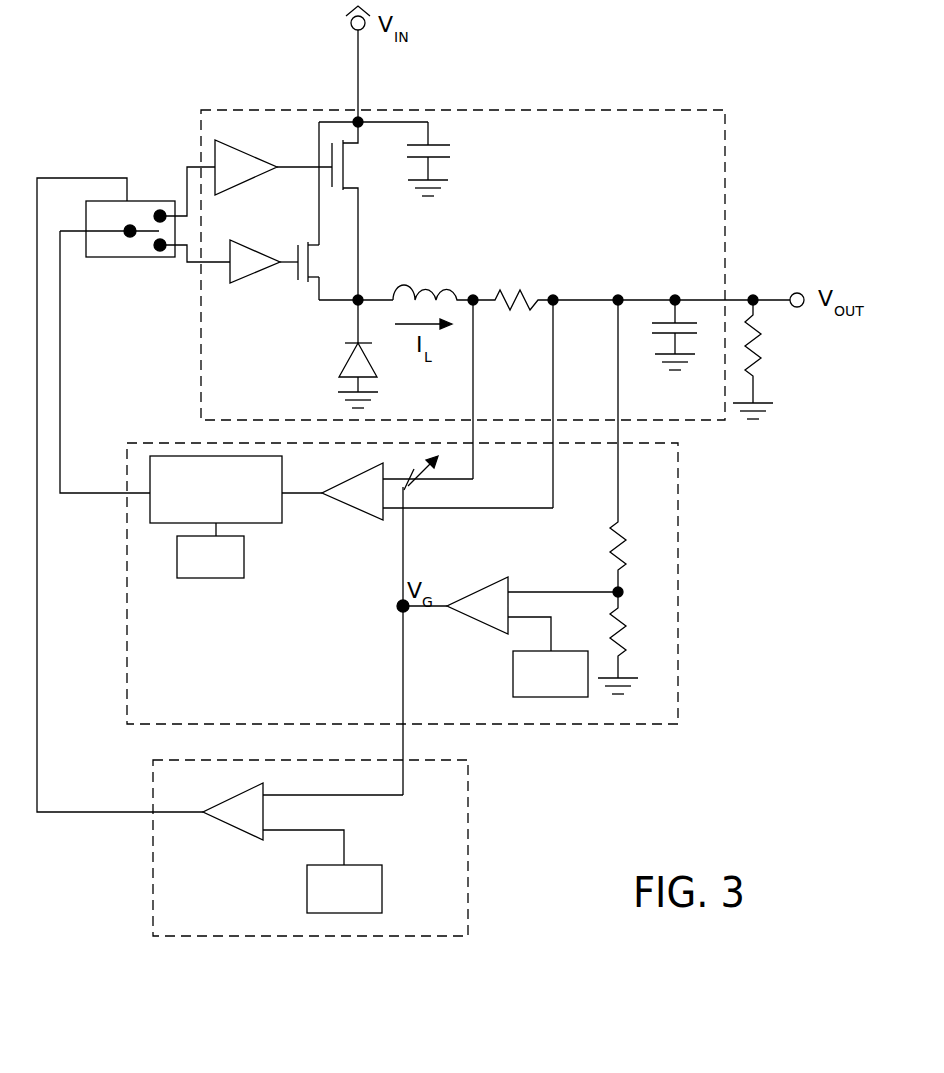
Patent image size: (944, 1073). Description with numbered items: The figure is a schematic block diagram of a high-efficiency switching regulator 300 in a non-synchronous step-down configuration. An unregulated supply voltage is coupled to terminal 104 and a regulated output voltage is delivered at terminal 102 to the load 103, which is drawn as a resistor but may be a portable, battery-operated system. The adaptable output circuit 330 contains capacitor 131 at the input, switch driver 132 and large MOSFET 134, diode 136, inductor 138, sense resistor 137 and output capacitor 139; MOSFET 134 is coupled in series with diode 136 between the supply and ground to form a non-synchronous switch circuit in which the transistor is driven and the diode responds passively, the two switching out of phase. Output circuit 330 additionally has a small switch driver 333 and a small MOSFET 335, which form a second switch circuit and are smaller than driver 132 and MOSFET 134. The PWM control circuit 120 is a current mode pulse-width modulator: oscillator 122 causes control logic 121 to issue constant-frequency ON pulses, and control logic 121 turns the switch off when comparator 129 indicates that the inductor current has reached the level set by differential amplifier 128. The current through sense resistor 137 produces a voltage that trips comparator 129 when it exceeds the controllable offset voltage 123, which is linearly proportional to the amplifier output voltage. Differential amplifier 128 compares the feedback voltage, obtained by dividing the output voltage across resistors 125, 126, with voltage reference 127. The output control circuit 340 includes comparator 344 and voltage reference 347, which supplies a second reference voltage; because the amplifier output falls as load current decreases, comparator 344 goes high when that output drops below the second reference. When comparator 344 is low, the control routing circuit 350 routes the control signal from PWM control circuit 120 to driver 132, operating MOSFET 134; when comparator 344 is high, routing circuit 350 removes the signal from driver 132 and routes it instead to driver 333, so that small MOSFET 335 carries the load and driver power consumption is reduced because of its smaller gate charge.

The switching regulator 300 is at (753, 140).
The adaptable output circuit 330 is at (725, 214).
The PWM control circuit 120 is at (680, 676).
The output control circuit 340 is at (468, 829).
The terminal 104 is at (351, 21).
The control routing circuit 350 is at (165, 200).
The switch driver 132 is at (254, 156).
The MOSFET 134 is at (345, 180).
The capacitor 131 is at (452, 150).
The small switch driver 333 is at (250, 245).
The small MOSFET 335 is at (340, 258).
The inductor 138 is at (422, 270).
The diode 136 is at (350, 357).
The sense resistor 137 is at (537, 295).
The terminal 102 is at (797, 292).
The capacitor 139 is at (655, 332).
The load 103 is at (767, 362).
The control logic 121 is at (300, 477).
The oscillator 122 is at (238, 580).
The comparator 129 is at (358, 510).
The controllable offset voltage 123 is at (418, 482).
The differential amplifier 128 is at (476, 619).
The resistor 125 is at (635, 540).
The resistor 126 is at (637, 618).
The voltage reference 127 is at (513, 667).
The comparator 344 is at (243, 829).
The voltage reference 347 is at (413, 890).